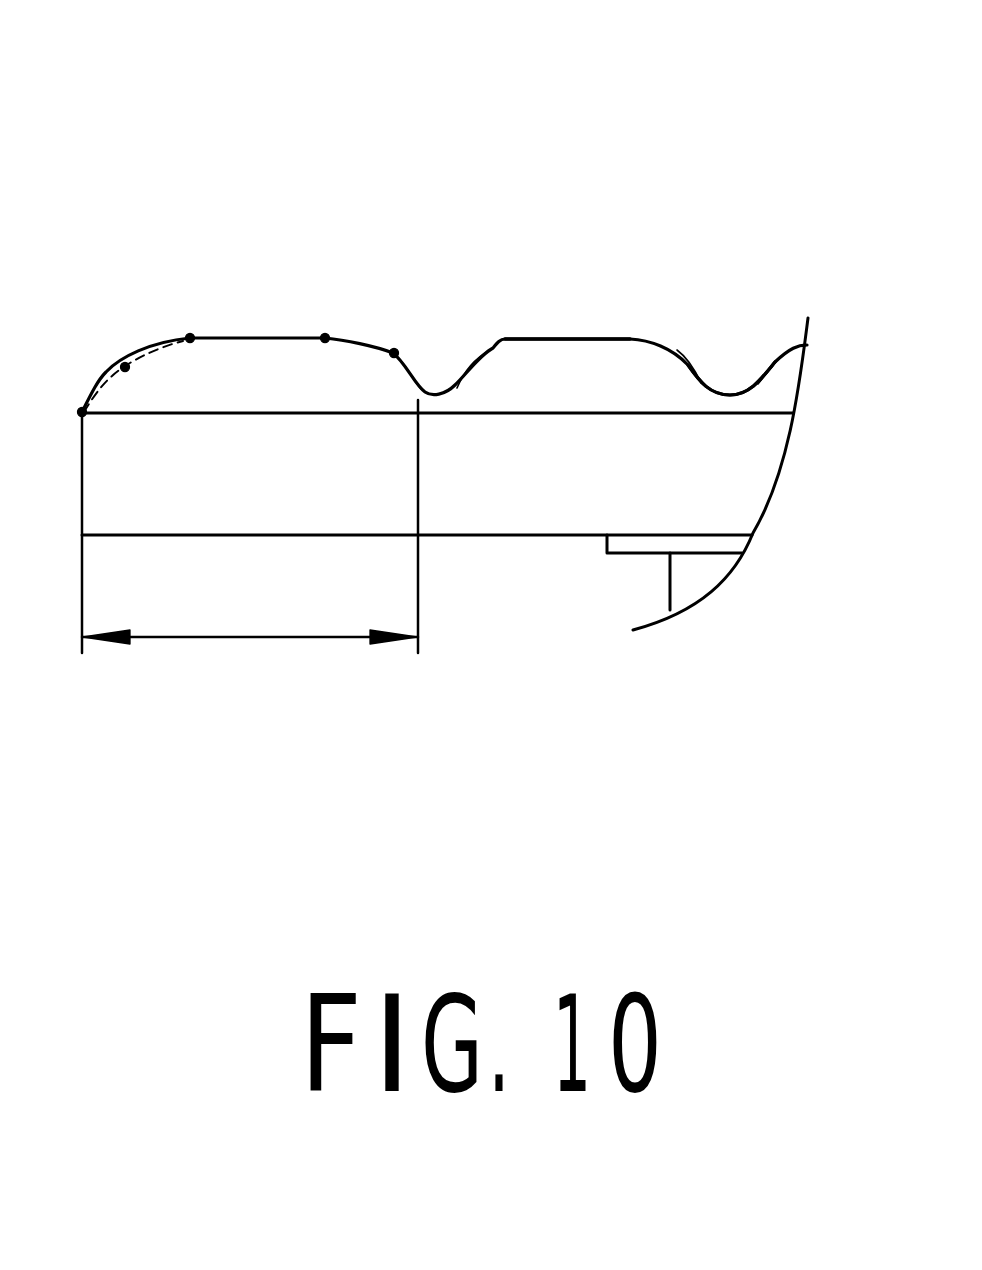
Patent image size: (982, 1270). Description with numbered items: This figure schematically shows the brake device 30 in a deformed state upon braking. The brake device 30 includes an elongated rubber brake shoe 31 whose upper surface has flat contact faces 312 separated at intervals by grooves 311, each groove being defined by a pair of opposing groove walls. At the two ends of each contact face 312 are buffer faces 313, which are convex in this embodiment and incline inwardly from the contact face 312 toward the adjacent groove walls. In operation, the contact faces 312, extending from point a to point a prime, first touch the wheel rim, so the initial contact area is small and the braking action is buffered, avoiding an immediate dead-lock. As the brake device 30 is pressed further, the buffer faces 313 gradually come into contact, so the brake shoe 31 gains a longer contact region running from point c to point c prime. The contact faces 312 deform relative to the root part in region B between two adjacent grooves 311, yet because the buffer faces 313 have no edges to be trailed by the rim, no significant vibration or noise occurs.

The brake device 30 is at (237, 291).
The brake shoe 31 is at (505, 497).
The grooves 311 is at (728, 384).
The contact faces 312 is at (613, 339).
The buffer faces 313 is at (486, 348).